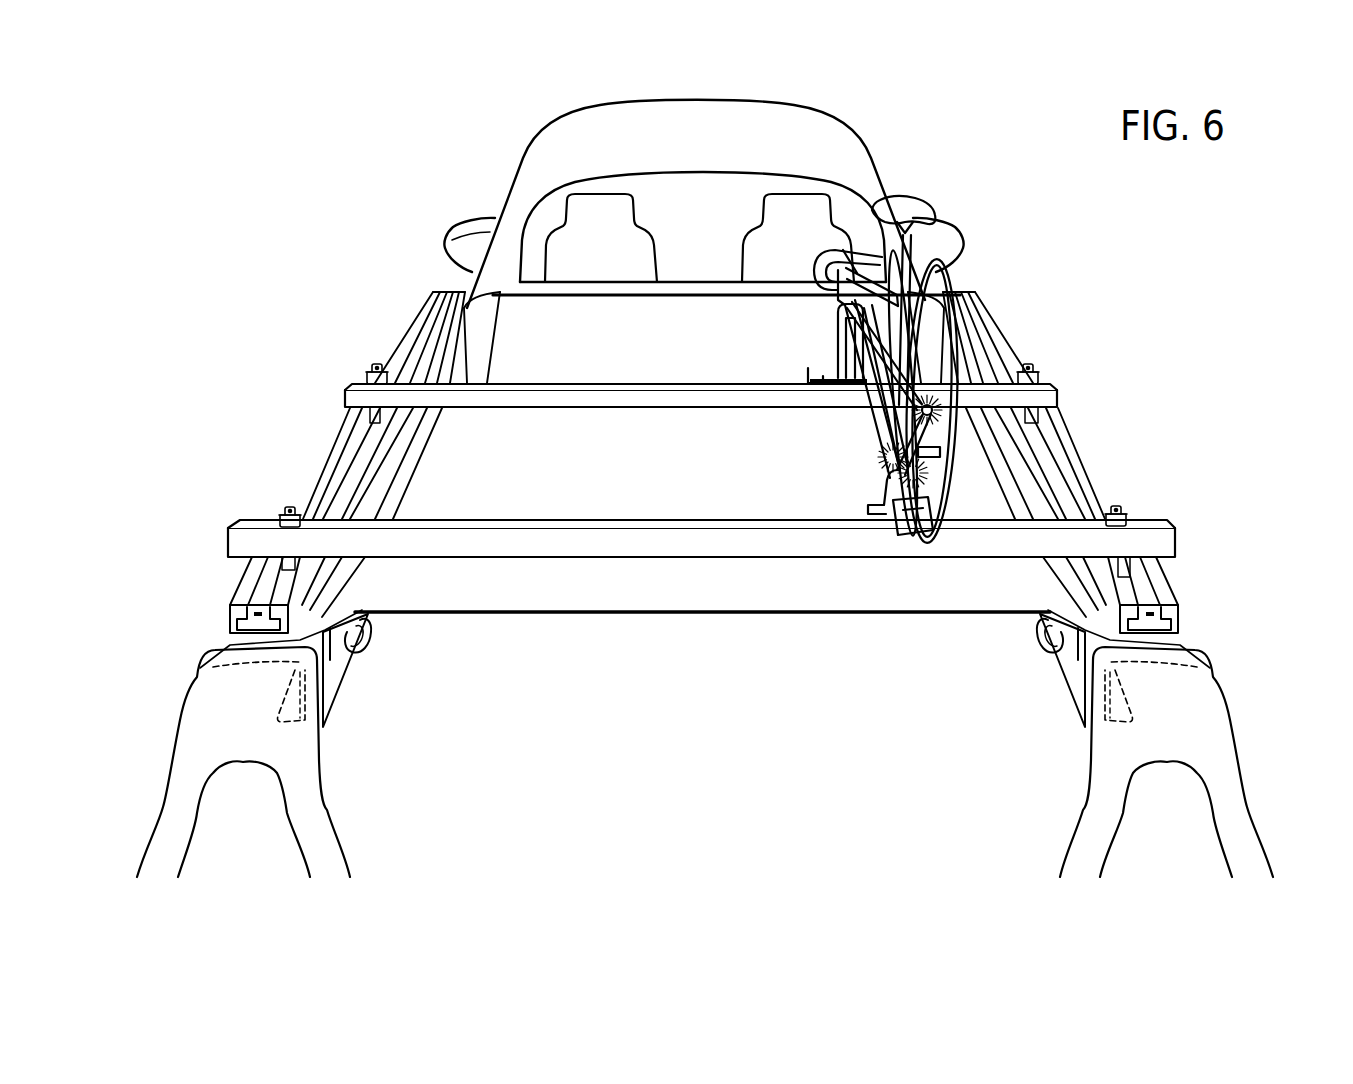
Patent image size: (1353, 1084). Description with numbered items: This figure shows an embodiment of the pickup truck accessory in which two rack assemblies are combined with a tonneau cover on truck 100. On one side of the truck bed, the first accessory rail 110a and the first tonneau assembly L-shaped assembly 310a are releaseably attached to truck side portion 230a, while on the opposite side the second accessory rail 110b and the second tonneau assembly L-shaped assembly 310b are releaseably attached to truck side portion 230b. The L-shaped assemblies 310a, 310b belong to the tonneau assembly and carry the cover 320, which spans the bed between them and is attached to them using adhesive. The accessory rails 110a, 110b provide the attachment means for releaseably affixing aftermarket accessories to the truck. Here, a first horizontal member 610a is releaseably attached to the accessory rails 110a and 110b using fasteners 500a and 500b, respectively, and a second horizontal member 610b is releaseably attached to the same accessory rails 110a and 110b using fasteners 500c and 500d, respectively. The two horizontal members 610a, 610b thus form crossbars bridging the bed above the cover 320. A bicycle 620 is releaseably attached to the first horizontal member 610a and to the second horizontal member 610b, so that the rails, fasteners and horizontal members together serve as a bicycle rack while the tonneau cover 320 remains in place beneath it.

The truck 100 is at (458, 144).
The first accessory rail 110a is at (233, 600).
The second accessory rail 110b is at (1169, 599).
The truck side portion 230a is at (215, 660).
The truck side portion 230b is at (1195, 660).
The first tonneau assembly L-shaped assembly 310a is at (340, 652).
The second tonneau assembly L-shaped assembly 310b is at (1065, 654).
The cover 320 is at (703, 614).
The fastener 500a is at (366, 372).
The fastener 500b is at (1040, 373).
The fastener 500c is at (280, 515).
The fastener 500d is at (1128, 514).
The first horizontal member 610a is at (345, 393).
The second horizontal member 610b is at (228, 540).
The bicycle 620 is at (957, 270).